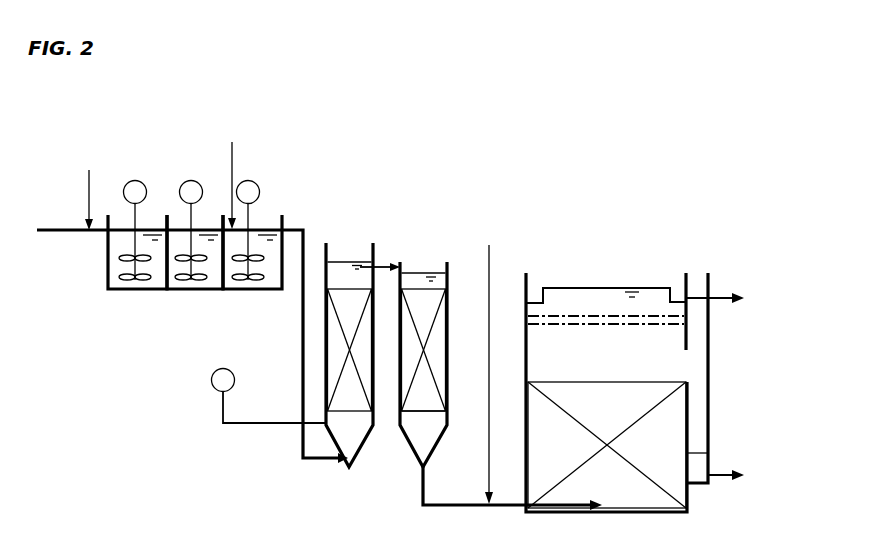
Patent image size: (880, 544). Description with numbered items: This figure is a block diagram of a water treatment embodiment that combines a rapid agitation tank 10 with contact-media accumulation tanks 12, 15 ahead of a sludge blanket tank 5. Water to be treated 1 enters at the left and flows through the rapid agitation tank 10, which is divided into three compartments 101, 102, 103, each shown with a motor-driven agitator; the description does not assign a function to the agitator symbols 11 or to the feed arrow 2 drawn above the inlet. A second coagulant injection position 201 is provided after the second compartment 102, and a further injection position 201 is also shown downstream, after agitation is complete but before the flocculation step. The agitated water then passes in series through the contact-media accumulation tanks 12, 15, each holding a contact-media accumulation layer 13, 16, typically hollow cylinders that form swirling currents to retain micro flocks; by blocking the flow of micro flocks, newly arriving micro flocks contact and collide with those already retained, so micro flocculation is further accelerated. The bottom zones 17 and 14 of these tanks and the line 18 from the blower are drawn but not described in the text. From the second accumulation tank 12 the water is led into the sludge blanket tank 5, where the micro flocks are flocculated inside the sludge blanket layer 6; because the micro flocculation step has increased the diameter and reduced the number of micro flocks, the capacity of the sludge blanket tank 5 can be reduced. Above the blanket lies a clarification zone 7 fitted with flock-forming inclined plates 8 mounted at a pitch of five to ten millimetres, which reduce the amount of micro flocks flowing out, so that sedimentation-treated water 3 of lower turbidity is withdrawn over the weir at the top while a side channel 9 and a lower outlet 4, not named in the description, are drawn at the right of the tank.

The water to be treated 1 is at (192, 339).
The chemical feed 2 is at (90, 193).
The sedimentation-treated water 3 is at (715, 306).
The sludge outlet 4 is at (726, 485).
The sludge blanket tank 5 is at (606, 400).
The sludge blanket layer 6 is at (607, 445).
The clarification zone 7 is at (590, 346).
The flock-forming inclined plates 8 is at (606, 313).
The sludge discharge channel 9 is at (697, 378).
The rapid agitation tank 10 is at (212, 366).
The agitator motor 11 is at (191, 218).
The contact-media accumulation tank 12 is at (501, 386).
The contact-media accumulation layer 13 is at (425, 350).
The bottom zone of second column 14 is at (424, 419).
The contact-media accumulation tank 15 is at (363, 355).
The contact-media accumulation layer 16 is at (350, 350).
The aeration zone 17 is at (355, 411).
The air supply line 18 is at (257, 408).
The first compartment 101 is at (137, 260).
The second compartment 102 is at (195, 260).
The third compartment 103 is at (252, 260).
The second coagulant injection position 201 is at (361, 311).